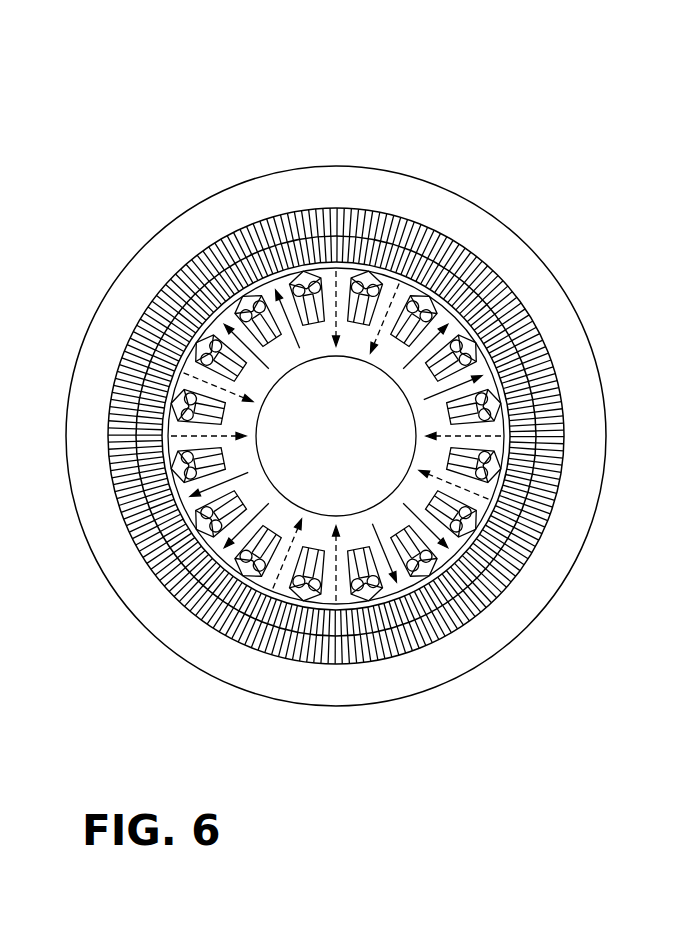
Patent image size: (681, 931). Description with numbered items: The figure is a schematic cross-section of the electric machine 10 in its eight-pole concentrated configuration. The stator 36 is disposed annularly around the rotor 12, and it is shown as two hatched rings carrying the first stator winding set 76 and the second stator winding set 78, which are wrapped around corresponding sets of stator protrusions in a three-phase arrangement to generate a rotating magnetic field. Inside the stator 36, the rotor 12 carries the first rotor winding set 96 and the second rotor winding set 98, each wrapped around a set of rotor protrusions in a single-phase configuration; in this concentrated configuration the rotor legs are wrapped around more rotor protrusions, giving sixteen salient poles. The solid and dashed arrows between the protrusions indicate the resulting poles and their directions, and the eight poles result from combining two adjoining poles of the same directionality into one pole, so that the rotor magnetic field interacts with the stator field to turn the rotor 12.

The electric machine 10 is at (440, 108).
The rotor 12 is at (261, 357).
The stator 36 is at (495, 215).
The first stator winding set 76 is at (520, 303).
The second stator winding set 78 is at (525, 355).
The first rotor winding set 96 is at (168, 404).
The second rotor winding set 98 is at (158, 437).